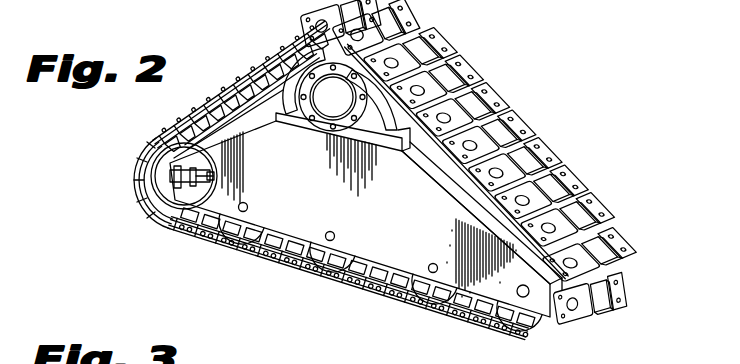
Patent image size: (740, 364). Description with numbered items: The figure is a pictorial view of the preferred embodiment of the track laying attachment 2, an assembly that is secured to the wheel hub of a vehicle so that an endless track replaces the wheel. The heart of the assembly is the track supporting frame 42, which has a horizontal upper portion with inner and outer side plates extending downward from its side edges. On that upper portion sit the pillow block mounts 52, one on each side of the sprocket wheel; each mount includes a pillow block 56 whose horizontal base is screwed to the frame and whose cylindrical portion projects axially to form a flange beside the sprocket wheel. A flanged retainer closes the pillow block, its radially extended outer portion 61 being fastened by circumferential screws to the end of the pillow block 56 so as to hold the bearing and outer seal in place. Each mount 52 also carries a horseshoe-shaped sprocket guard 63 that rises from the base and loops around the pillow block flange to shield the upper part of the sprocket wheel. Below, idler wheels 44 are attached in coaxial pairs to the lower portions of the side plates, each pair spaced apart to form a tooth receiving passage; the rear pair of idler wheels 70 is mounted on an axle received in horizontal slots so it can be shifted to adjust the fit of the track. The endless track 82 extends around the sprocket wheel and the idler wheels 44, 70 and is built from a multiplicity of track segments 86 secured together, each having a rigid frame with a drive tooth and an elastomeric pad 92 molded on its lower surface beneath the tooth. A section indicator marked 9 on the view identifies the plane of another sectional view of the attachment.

The track laying attachment 2 is at (500, 97).
The track supporting frame 42 is at (320, 222).
The idler wheels 44 is at (443, 287).
The pillow block mounts 52 is at (464, 216).
The pillow block 56 is at (400, 150).
The radially extended outer portion of the flanged retainer 61 is at (333, 124).
The sprocket guard 63 is at (290, 50).
The rear pair of idler wheels 70 is at (177, 225).
The endless track 82 is at (523, 133).
The track segments 86 is at (572, 178).
The elastomeric pad 92 is at (572, 210).
The section line 9 is at (332, 285).